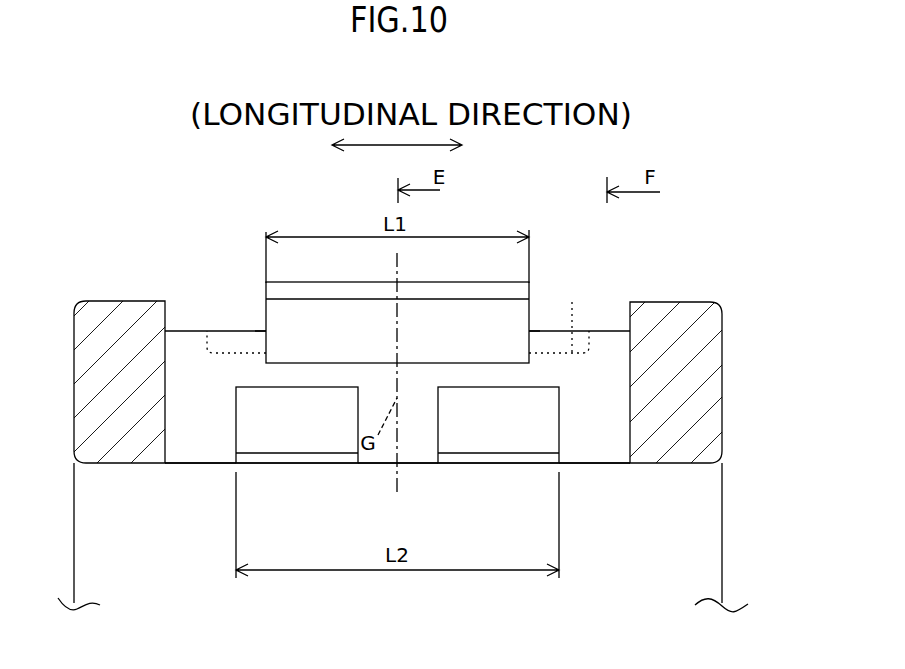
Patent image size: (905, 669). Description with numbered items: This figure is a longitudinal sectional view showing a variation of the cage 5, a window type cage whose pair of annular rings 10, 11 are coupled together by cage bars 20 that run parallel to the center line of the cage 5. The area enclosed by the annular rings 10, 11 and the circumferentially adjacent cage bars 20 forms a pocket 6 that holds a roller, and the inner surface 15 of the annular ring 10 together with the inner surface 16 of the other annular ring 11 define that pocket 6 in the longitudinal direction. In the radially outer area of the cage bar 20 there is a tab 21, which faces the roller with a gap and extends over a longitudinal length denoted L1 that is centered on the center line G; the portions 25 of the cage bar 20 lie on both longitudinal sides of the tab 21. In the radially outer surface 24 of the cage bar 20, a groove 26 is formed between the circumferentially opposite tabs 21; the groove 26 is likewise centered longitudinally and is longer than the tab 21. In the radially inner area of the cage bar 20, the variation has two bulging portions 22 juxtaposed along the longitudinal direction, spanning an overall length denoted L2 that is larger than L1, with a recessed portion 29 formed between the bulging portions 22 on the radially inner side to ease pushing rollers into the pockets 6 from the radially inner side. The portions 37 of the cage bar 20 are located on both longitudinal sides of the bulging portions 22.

The cage 5 is at (733, 336).
The pocket 6 is at (335, 326).
The annular ring 10 is at (120, 320).
The annular ring 11 is at (678, 322).
The inner surface 15 is at (174, 345).
The inner surface 16 is at (630, 348).
The cage bar 20 is at (580, 465).
The tab 21 is at (459, 310).
The bulging portion 22 is at (322, 436).
The radially outer surface 24 is at (212, 345).
The portions 25 is at (245, 343).
The groove 26 is at (559, 312).
The recessed portion 29 is at (420, 428).
The portions 37 is at (202, 445).